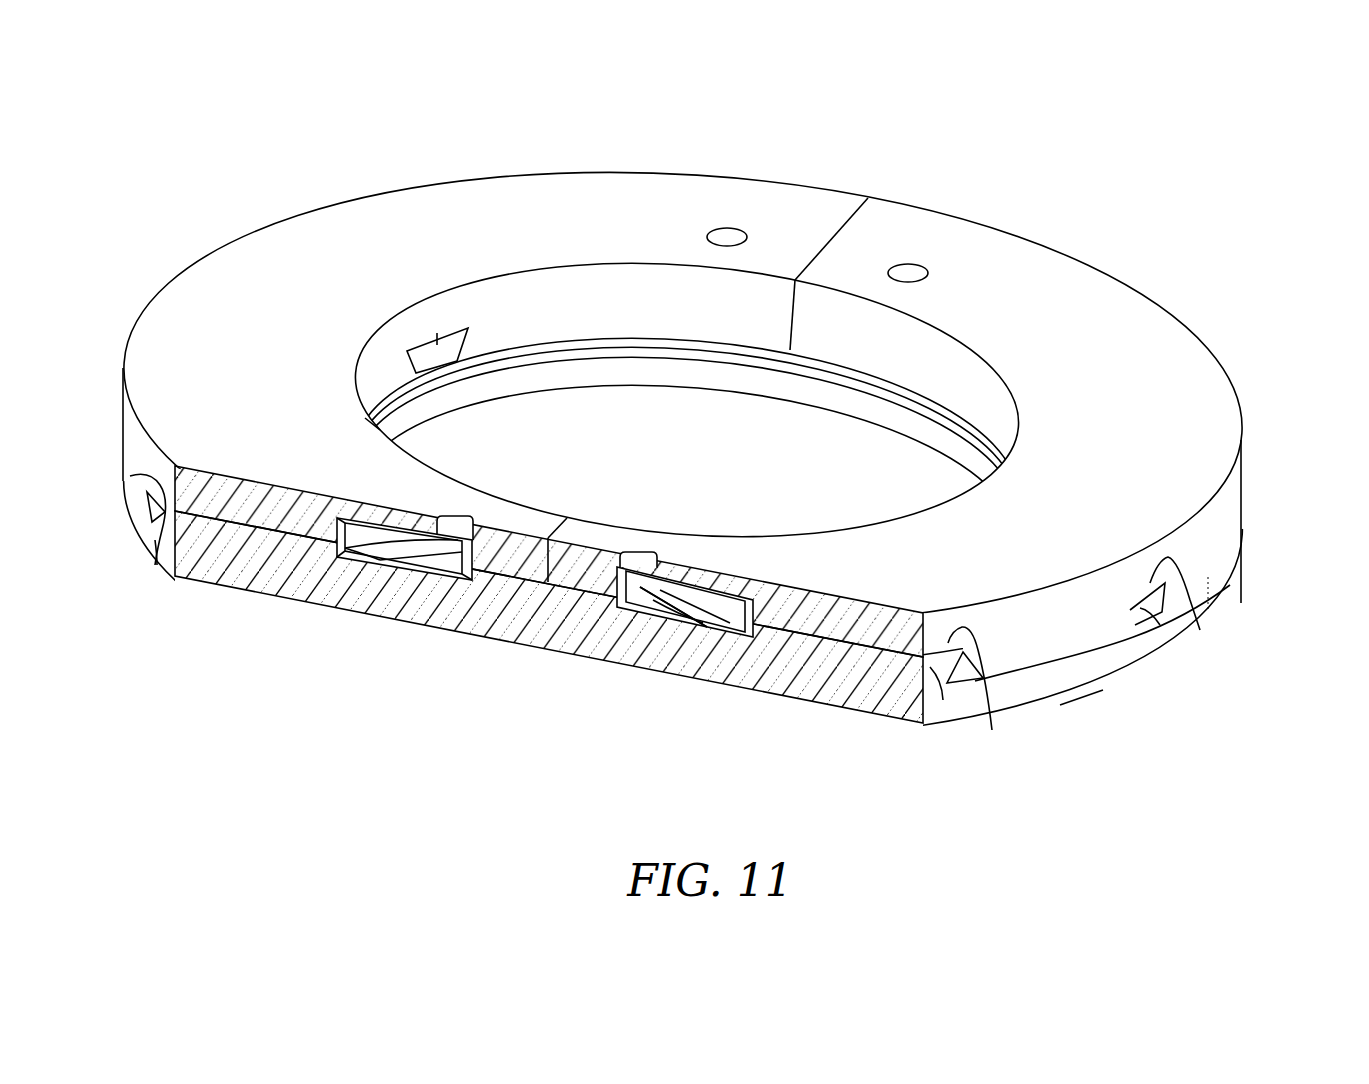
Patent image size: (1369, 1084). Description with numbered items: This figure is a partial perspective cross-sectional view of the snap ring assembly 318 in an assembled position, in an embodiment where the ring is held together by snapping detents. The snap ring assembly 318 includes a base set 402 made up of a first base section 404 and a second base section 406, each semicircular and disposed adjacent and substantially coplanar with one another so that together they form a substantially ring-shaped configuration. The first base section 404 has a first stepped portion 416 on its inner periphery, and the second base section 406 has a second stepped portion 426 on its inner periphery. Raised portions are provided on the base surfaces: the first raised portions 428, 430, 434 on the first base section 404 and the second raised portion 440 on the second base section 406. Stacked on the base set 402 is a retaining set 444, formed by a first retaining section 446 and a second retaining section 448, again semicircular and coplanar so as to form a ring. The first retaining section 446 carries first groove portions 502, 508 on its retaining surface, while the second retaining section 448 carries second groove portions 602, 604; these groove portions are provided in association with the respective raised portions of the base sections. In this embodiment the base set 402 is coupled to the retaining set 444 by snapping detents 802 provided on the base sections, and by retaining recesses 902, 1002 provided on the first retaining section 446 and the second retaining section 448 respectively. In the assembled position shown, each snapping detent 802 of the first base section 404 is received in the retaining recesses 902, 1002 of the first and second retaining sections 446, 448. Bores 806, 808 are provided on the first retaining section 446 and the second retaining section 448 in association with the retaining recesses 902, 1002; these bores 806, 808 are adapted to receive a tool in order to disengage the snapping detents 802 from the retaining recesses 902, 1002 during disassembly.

The snap ring assembly 318 is at (1108, 160).
The base set 402 is at (1247, 556).
The first base section 404 is at (1103, 680).
The second base section 406 is at (1242, 603).
The first stepped portion 416 is at (380, 425).
The second stepped portion 426 is at (736, 383).
The first raised portion 428 is at (930, 667).
The first raised portion 430 is at (157, 555).
The first raised portion 434 is at (1163, 628).
The second raised portion 440 is at (447, 342).
The retaining set 444 is at (1133, 288).
The first retaining section 446 is at (318, 250).
The second retaining section 448 is at (1160, 360).
The first groove portion 502 is at (150, 475).
The first groove portion 508 is at (437, 333).
The second groove portion 602 is at (960, 662).
The second groove portion 604 is at (1150, 612).
The snapping detent 802 is at (427, 557).
The bore 806 is at (727, 235).
The bore 808 is at (908, 273).
The retaining recess 902 is at (343, 557).
The retaining recess 1002 is at (706, 628).